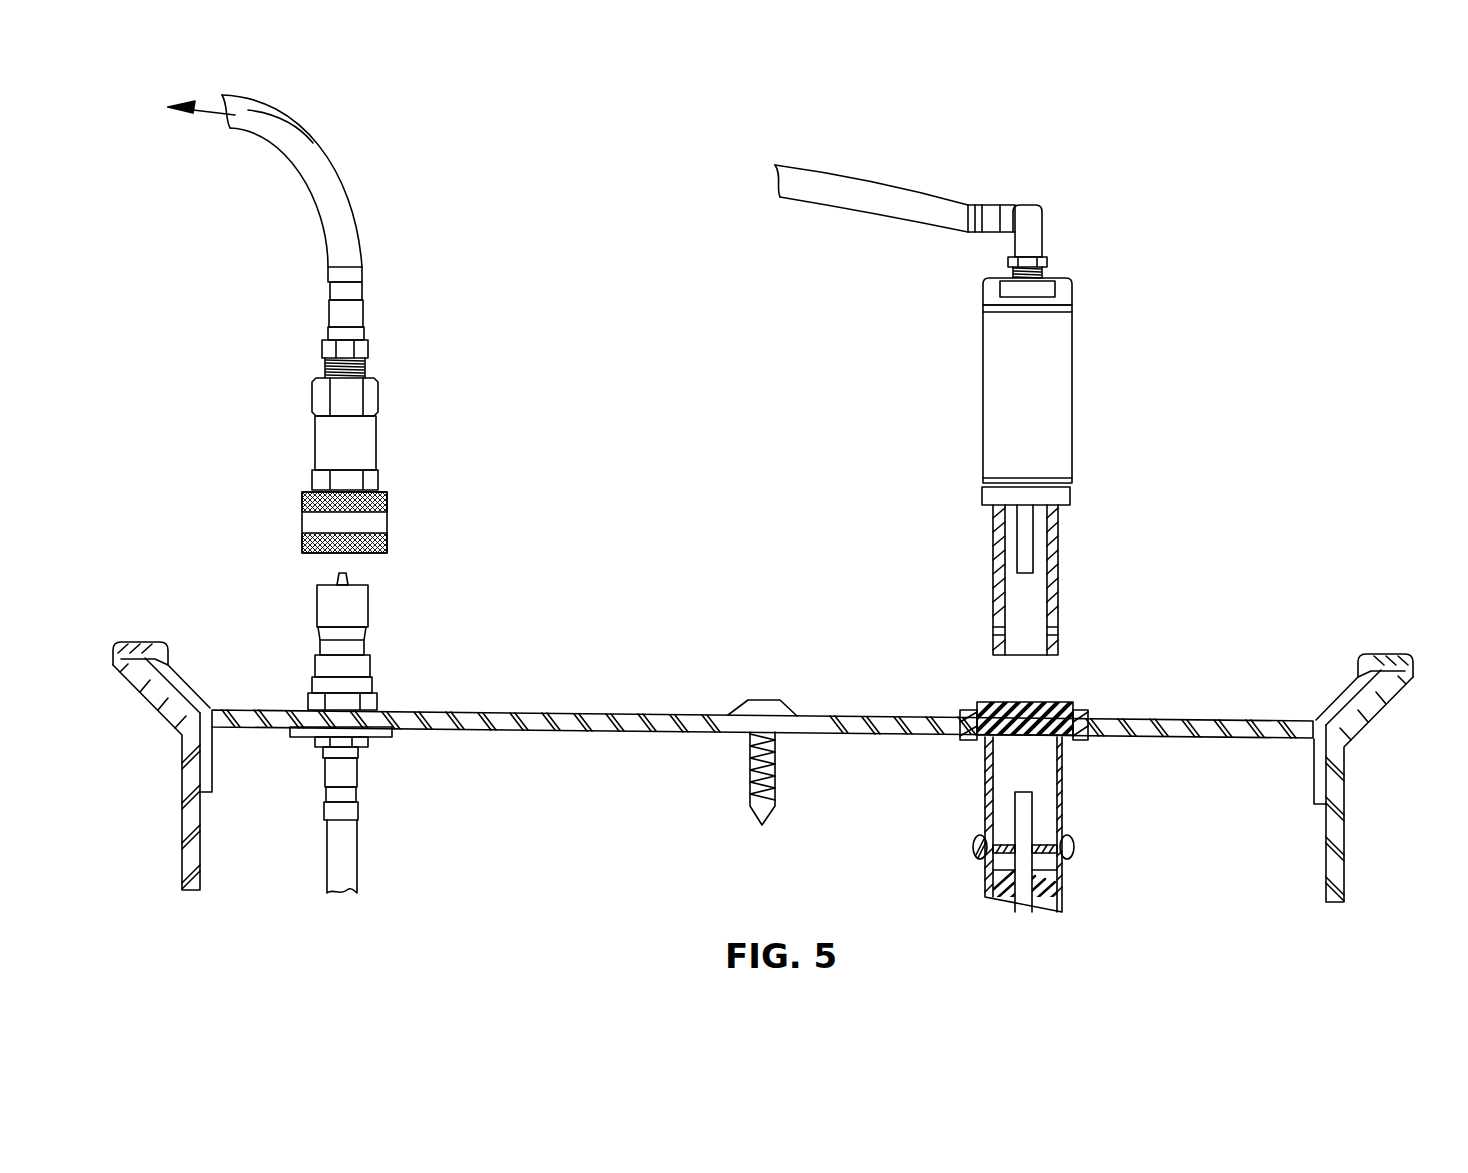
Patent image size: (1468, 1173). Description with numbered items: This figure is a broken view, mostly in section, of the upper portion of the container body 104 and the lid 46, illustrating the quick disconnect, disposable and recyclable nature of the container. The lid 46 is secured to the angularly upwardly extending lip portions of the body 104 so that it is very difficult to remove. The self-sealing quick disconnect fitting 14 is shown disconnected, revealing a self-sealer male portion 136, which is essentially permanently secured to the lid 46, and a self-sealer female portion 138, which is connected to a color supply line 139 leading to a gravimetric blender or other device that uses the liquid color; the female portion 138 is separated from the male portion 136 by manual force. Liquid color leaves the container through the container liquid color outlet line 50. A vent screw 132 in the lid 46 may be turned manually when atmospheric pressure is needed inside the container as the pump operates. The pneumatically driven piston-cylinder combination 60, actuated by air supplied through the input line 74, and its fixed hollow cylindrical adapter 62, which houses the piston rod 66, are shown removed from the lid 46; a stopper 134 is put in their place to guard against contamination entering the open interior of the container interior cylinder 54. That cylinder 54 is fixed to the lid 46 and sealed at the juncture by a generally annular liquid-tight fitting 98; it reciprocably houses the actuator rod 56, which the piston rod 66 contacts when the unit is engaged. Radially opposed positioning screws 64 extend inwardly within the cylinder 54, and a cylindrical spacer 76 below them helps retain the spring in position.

The self-sealing quick disconnect fitting 14 is at (332, 324).
The lid 46 is at (576, 712).
The container liquid color outlet line 50 is at (358, 846).
The container interior cylinder 54 is at (1064, 803).
The actuator rod 56 is at (1023, 810).
The piston-cylinder combination 60 is at (1074, 398).
The cylindrical adapter 62 is at (1058, 551).
The screws 64 is at (973, 846).
The piston rod 66 is at (1023, 573).
The input line 74 is at (855, 193).
The cylindrical spacer 76 is at (1045, 890).
The liquid-tight fitting 98 is at (1088, 748).
The body 104 is at (182, 810).
The vent screw 132 is at (765, 700).
The stopper 134 is at (1062, 702).
The self-sealer male portion 136 is at (380, 596).
The self-sealer female portion 138 is at (313, 441).
The color supply line 139 is at (340, 158).